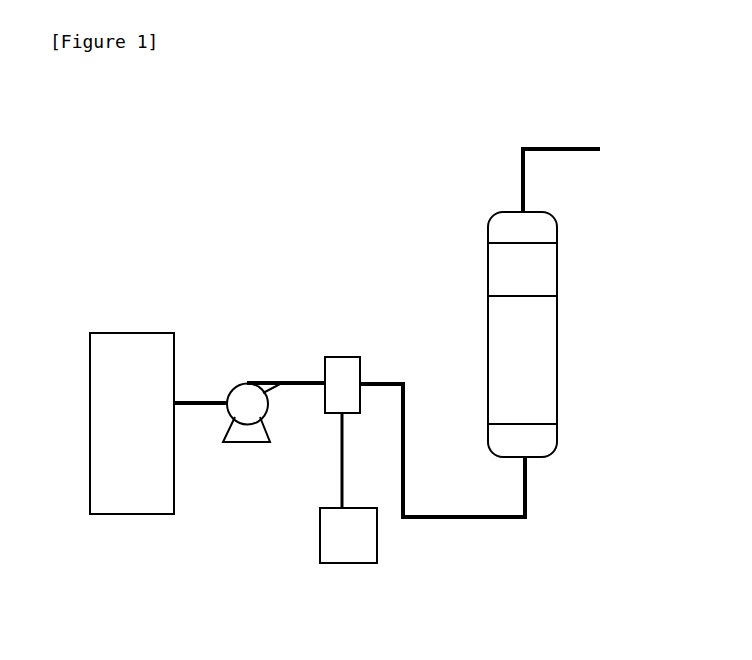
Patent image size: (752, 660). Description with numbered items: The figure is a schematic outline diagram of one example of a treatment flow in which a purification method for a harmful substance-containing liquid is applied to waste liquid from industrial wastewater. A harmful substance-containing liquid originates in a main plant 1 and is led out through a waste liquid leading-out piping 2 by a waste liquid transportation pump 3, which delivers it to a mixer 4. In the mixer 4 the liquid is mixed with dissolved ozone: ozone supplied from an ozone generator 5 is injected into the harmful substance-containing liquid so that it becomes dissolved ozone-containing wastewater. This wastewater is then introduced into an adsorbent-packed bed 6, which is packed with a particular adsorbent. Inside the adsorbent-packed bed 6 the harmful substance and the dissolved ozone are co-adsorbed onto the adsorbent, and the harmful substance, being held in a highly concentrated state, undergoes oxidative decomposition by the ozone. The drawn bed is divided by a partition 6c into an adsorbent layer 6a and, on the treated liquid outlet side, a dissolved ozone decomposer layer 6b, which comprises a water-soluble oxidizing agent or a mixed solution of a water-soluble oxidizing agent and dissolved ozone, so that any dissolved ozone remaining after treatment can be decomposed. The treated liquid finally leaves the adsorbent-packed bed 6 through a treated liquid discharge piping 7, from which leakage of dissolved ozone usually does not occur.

The main plant 1 is at (133, 493).
The waste liquid leading-out piping 2 is at (196, 402).
The waste liquid transportation pump 3 is at (243, 443).
The mixer 4 is at (338, 372).
The ozone generator 5 is at (355, 557).
The adsorbent-packed bed 6 is at (558, 340).
The adsorbent layer 6a is at (533, 403).
The dissolved ozone decomposer layer 6b is at (538, 263).
The partition 6c is at (548, 295).
The treated liquid discharge piping 7 is at (560, 147).